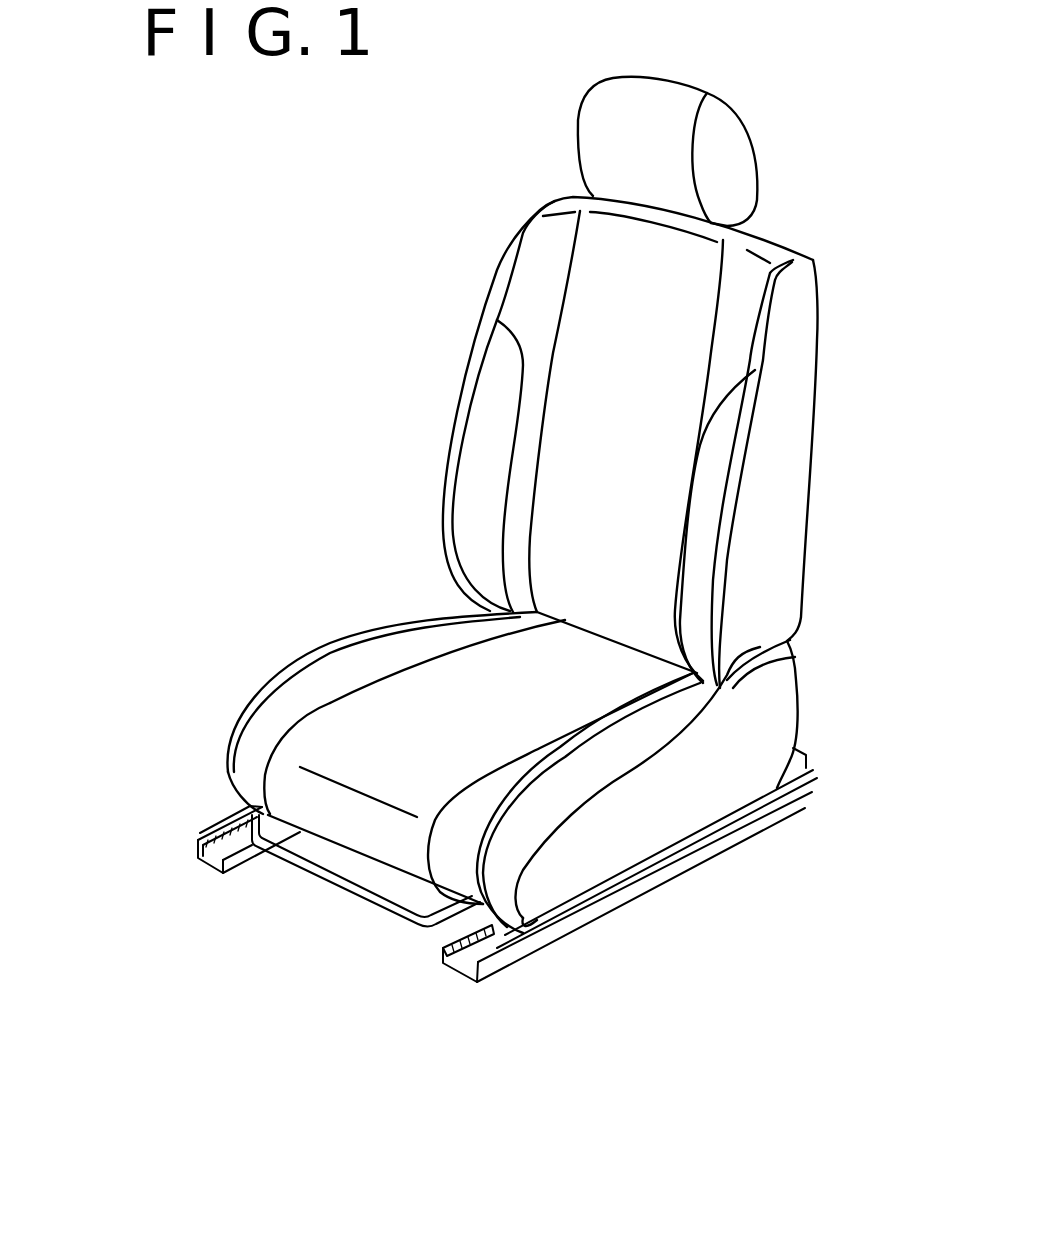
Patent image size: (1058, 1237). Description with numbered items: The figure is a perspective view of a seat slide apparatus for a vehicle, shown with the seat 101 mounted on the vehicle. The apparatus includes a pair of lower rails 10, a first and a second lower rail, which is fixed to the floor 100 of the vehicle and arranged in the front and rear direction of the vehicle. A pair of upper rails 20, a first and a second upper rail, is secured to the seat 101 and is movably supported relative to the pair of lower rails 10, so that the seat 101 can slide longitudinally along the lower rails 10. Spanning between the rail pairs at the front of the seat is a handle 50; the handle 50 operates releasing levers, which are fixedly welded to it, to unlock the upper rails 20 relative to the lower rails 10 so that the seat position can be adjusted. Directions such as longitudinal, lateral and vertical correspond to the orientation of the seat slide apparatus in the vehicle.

The lower rail 10 is at (200, 856).
The upper rail 20 is at (263, 813).
The handle 50 is at (337, 887).
The floor 100 is at (735, 1012).
The seat 101 is at (433, 692).